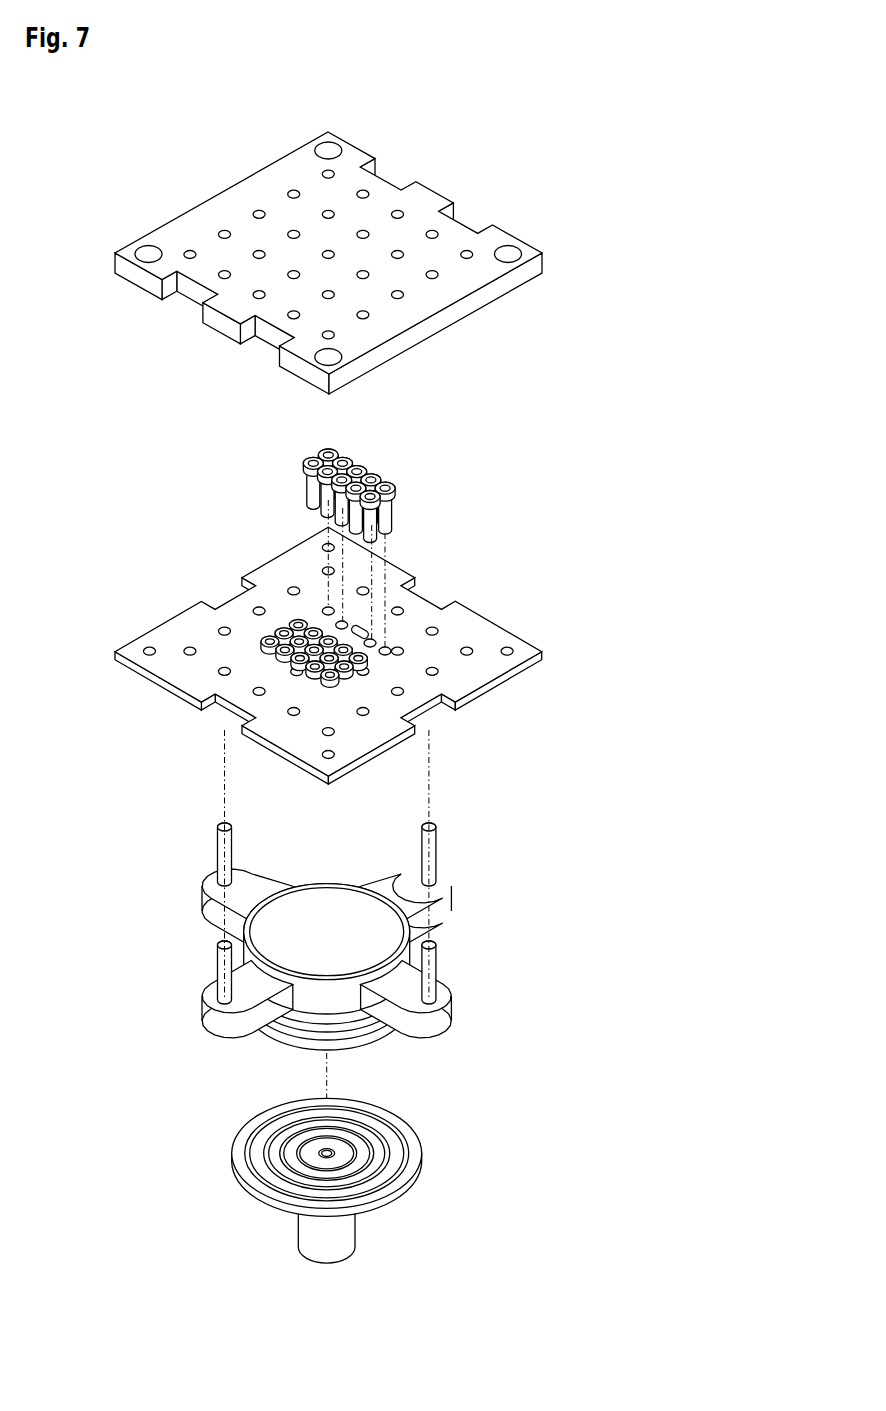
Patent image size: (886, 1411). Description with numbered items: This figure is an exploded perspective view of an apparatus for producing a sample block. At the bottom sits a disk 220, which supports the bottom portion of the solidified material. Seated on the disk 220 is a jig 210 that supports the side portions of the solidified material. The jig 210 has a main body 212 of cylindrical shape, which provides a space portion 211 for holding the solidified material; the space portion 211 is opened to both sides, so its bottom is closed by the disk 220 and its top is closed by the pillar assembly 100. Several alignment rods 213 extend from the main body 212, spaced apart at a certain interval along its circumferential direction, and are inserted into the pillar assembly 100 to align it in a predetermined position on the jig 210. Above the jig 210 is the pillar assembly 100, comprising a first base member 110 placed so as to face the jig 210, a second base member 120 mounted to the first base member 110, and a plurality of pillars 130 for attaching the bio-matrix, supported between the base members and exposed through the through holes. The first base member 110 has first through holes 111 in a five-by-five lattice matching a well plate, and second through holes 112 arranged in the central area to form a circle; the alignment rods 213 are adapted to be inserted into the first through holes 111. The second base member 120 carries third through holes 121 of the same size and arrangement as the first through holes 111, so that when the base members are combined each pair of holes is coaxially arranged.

The pillar assembly 100 is at (344, 441).
The first base member 110 is at (333, 655).
The first through holes 111 is at (400, 693).
The second through holes 112 is at (397, 646).
The second base member 120 is at (328, 256).
The third through holes 121 is at (256, 206).
The pillars 130 is at (304, 462).
The jig 210 is at (343, 906).
The space portion 211 is at (306, 918).
The main body 212 is at (331, 999).
The alignment rods 213 is at (216, 856).
The disk 220 is at (445, 1148).